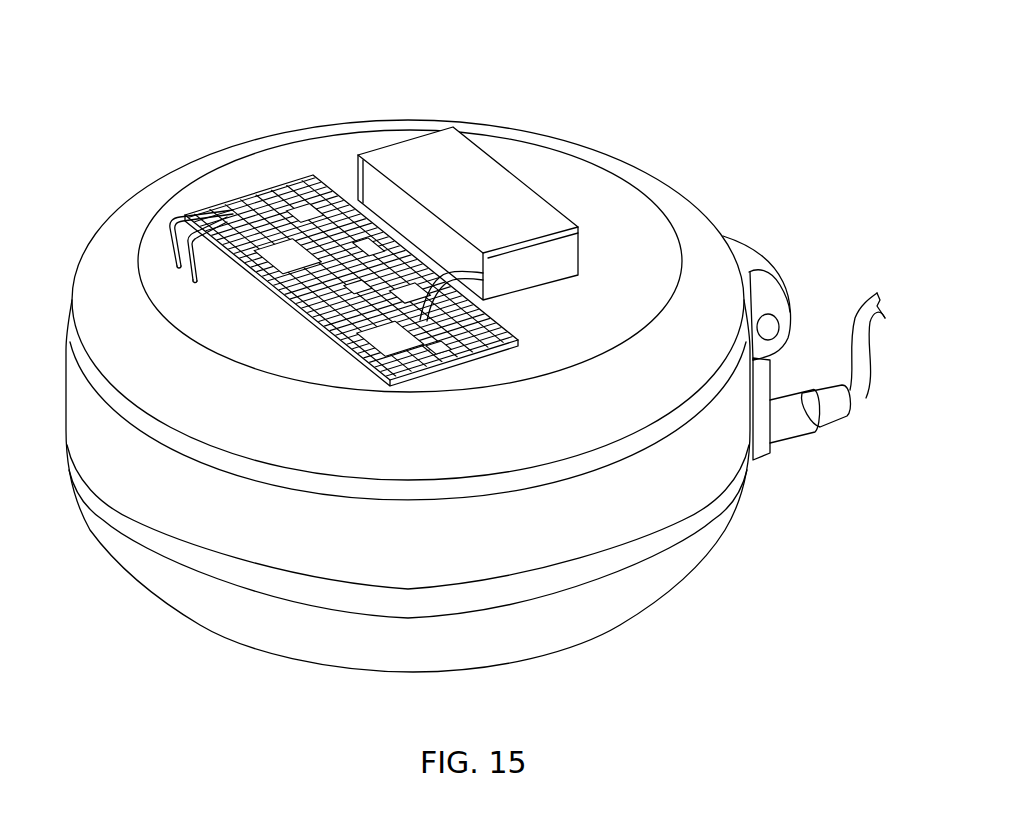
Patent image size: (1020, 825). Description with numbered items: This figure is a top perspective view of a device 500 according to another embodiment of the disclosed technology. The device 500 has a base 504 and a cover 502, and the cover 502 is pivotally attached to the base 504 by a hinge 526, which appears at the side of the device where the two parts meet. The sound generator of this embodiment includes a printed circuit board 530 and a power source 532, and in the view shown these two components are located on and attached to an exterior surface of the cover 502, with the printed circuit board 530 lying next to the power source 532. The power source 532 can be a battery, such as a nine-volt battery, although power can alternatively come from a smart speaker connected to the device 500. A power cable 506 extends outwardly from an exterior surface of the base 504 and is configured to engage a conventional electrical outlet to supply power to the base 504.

The device 500 is at (152, 100).
The cover 502 is at (656, 596).
The base 504 is at (699, 245).
The power cable 506 is at (837, 412).
The hinge 526 is at (769, 327).
The printed circuit board 530 is at (273, 192).
The power source 532 is at (468, 182).